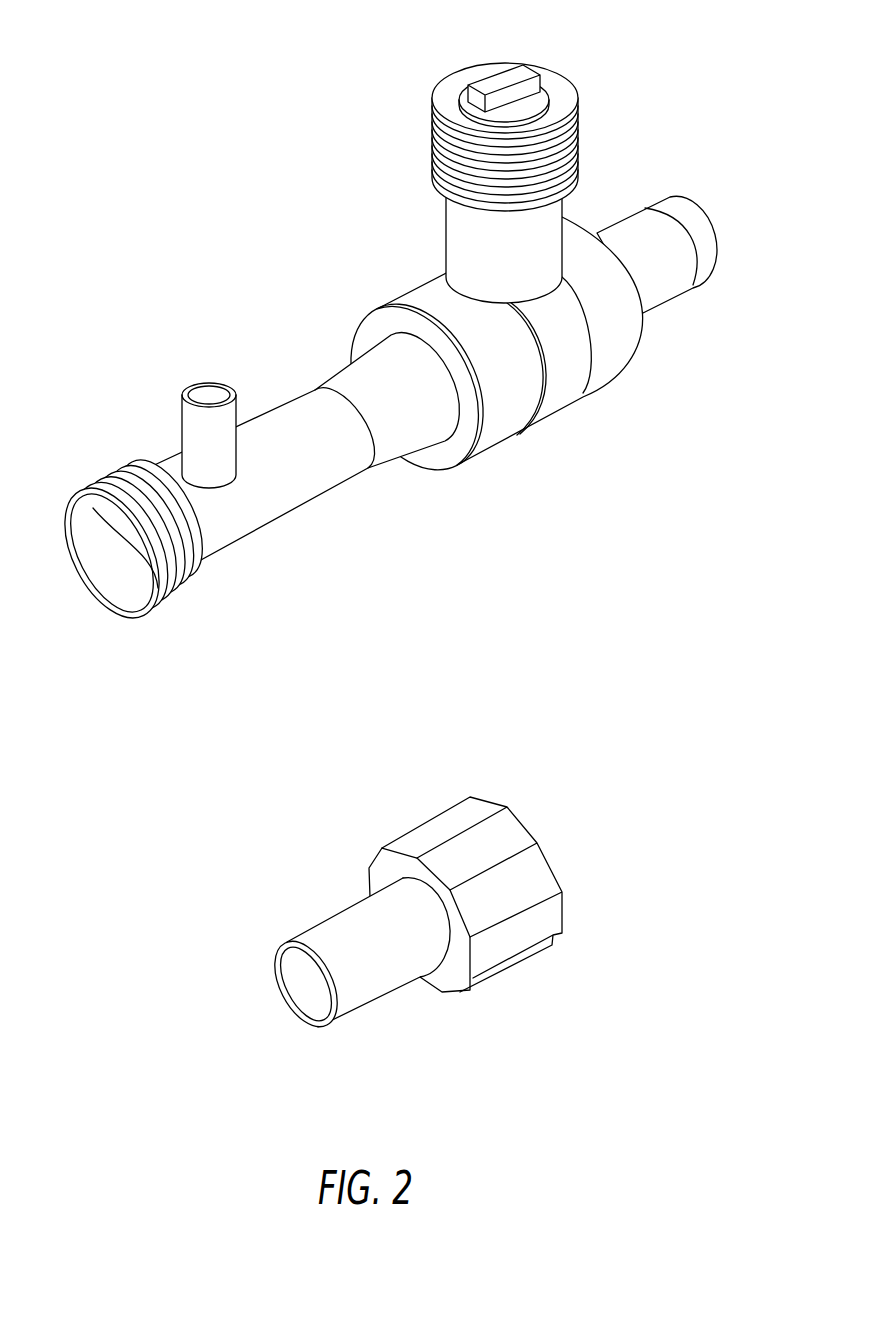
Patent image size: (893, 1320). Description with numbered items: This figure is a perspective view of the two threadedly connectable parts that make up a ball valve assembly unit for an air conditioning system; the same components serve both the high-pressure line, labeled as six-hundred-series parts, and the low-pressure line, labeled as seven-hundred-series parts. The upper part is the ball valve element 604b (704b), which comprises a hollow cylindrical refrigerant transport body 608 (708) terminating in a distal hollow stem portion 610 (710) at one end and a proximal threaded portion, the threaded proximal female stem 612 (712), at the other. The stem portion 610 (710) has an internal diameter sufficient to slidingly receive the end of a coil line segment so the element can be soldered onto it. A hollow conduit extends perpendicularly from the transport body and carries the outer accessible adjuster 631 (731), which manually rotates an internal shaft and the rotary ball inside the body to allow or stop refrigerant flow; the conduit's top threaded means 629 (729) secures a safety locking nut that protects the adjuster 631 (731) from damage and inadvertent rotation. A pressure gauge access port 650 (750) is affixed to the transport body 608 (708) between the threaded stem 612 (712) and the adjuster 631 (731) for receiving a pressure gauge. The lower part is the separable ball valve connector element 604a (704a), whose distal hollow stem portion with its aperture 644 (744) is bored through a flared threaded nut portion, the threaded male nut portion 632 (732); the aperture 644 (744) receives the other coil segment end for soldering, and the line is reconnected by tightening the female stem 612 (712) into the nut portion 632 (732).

The ball valve connector element 604a is at (369, 896).
The ball valve element 604b is at (412, 346).
The hollow cylindrical refrigerant transport body 608 is at (405, 346).
The distal hollow stem portion 610 is at (688, 213).
The proximal threaded portion 612 is at (176, 564).
The top threaded means 629 is at (598, 156).
The accessible adjuster 631 is at (561, 61).
The flared threaded nut portion 632 is at (493, 861).
The aperture 644 is at (270, 970).
The pressure gauge access port 650 is at (257, 411).
The ball valve connector element 704a is at (369, 896).
The ball valve element 704b is at (412, 346).
The hollow cylindrical refrigerant transport body 708 is at (405, 346).
The distal hollow stem portion 710 is at (658, 228).
The threaded proximal female stem 712 is at (176, 564).
The top threaded means 729 is at (598, 156).
The accessible adjuster 731 is at (510, 74).
The threaded male nut portion 732 is at (497, 830).
The aperture 744 is at (307, 980).
The pressure gauge access port 750 is at (207, 398).